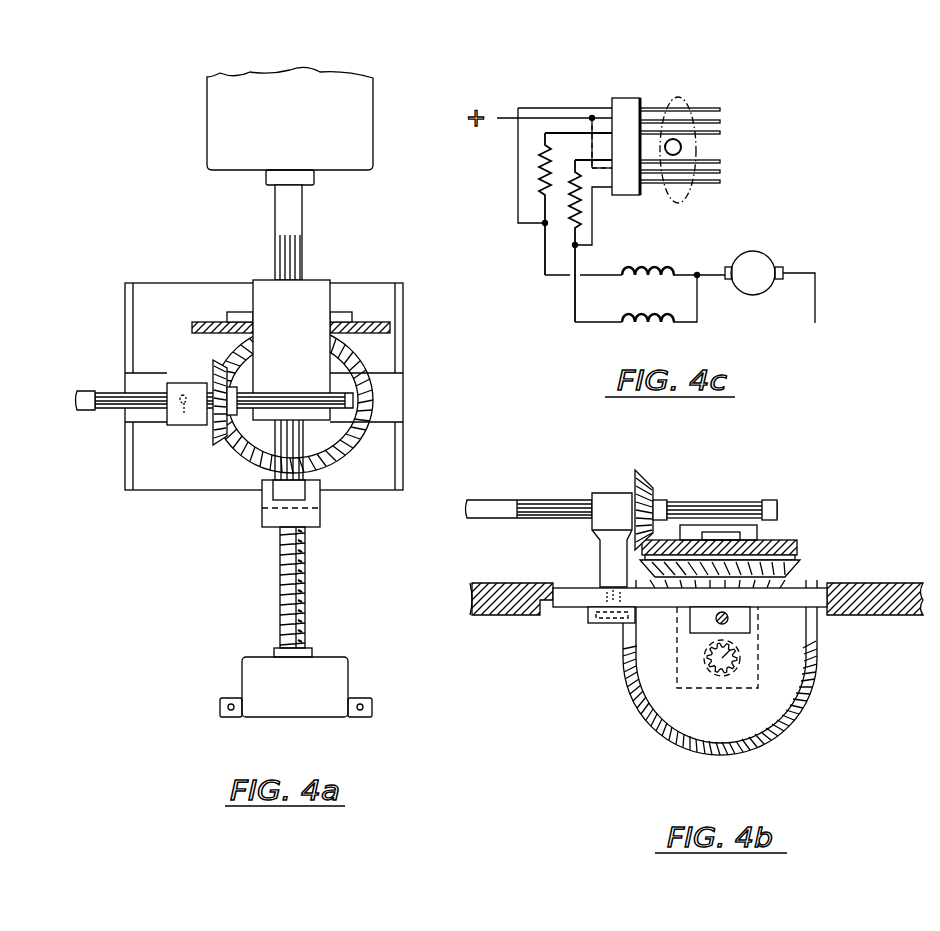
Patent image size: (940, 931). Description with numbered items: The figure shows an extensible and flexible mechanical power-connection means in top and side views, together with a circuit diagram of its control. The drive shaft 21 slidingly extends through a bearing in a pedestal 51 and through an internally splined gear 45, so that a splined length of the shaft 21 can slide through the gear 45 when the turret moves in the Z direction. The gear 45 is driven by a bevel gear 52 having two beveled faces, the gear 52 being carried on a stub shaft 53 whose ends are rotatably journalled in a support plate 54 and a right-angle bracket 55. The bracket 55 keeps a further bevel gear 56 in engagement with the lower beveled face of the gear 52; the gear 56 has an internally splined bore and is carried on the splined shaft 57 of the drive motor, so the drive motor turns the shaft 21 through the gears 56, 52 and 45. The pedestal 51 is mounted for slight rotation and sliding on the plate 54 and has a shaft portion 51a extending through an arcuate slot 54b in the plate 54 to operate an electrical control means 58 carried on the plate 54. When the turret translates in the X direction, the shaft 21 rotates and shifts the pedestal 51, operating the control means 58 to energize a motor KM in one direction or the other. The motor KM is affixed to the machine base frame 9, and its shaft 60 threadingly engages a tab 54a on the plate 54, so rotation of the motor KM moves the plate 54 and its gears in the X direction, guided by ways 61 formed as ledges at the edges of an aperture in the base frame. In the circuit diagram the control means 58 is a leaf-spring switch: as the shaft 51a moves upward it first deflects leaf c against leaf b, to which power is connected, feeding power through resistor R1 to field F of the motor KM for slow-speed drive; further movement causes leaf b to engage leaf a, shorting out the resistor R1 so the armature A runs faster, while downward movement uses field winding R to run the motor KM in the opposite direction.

In FIG. 4a, the shaft 21 is at (93, 410).
In FIG. 4b, the shaft 21 is at (510, 500).
In FIG. 4a, the internally splined gear 45 is at (227, 373).
In FIG. 4b, the internally splined gear 45 is at (655, 483).
In FIG. 4a, the pedestal 51 is at (175, 425).
In FIG. 4b, the pedestal 51 is at (610, 493).
In FIG. 4a, the shaft portion 51a is at (185, 392).
In FIG. 4c, the shaft portion 51a is at (682, 148).
In FIG. 4b, the shaft portion 51a is at (600, 593).
In FIG. 4a, the bevel gear 52 is at (382, 352).
In FIG. 4b, the bevel gear 52 is at (797, 548).
In FIG. 4a, the stub shaft 53 is at (290, 387).
In FIG. 4b, the stub shaft 53 is at (728, 621).
In FIG. 4a, the plate 54 is at (382, 410).
In FIG. 4b, the plate 54 is at (812, 588).
In FIG. 4b, the tab 54a is at (690, 629).
In FIG. 4a, the arcuate slot 54b is at (192, 427).
In FIG. 4c, the arcuate slot 54b is at (692, 98).
In FIG. 4b, the arcuate slot 54b is at (620, 630).
In FIG. 4a, the right-angle bracket 55 is at (272, 285).
In FIG. 4b, the right-angle bracket 55 is at (778, 525).
In FIG. 4a, the bevel gear 56 is at (372, 310).
In FIG. 4b, the bevel gear 56 is at (652, 722).
In FIG. 4a, the splined shaft 57 is at (305, 242).
In FIG. 4b, the splined shaft 57 is at (722, 660).
In FIG. 4c, the control means 58 is at (628, 98).
In FIG. 4b, the control means 58 is at (595, 622).
In FIG. 4a, the shaft 60 is at (282, 588).
In FIG. 4b, the shaft 60 is at (752, 640).
In FIG. 4a, the ways 61 is at (403, 462).
In FIG. 4b, the ways 61 is at (533, 615).
In FIG. 4b, the machine base frame 9 is at (882, 616).
In FIG. 4a, the motor KM is at (247, 680).
In FIG. 4c, the motor KM is at (752, 339).
In FIG. 4c, the resistor R1 is at (543, 165).
In FIG. 4c, the field winding R is at (648, 331).
In FIG. 4c, the field F is at (648, 254).
In FIG. 4c, the armature A is at (754, 273).
In FIG. 4c, the leaf a is at (722, 112).
In FIG. 4c, the leaf b is at (722, 122).
In FIG. 4c, the leaf c is at (722, 134).